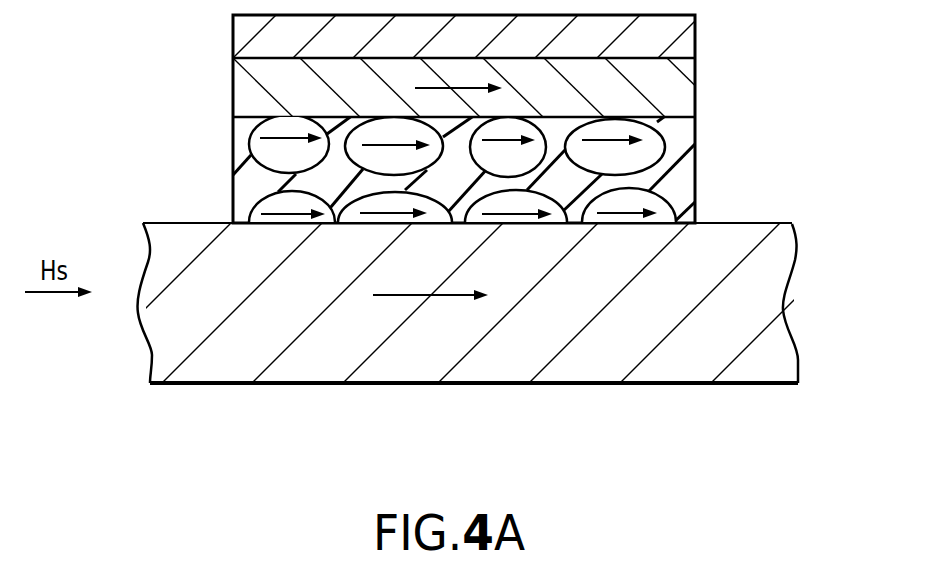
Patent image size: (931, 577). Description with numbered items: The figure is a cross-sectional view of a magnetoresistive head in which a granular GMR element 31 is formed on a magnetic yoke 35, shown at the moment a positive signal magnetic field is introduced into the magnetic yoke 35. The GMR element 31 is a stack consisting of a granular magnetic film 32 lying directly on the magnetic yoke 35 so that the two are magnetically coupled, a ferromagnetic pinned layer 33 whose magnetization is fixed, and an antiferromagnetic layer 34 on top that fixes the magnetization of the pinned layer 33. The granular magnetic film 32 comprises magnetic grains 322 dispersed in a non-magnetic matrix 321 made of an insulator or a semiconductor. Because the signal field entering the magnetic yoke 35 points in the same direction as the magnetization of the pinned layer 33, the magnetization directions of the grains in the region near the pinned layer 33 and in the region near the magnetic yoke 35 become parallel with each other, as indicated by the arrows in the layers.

The GMR element 31 is at (477, 134).
The granular magnetic film 32 is at (443, 185).
The non-magnetic matrix 321 is at (243, 184).
The magnetic grains 322 is at (240, 128).
The pinned layer 33 is at (690, 97).
The antiferromagnetic layer 34 is at (690, 44).
The magnetic yoke 35 is at (637, 375).